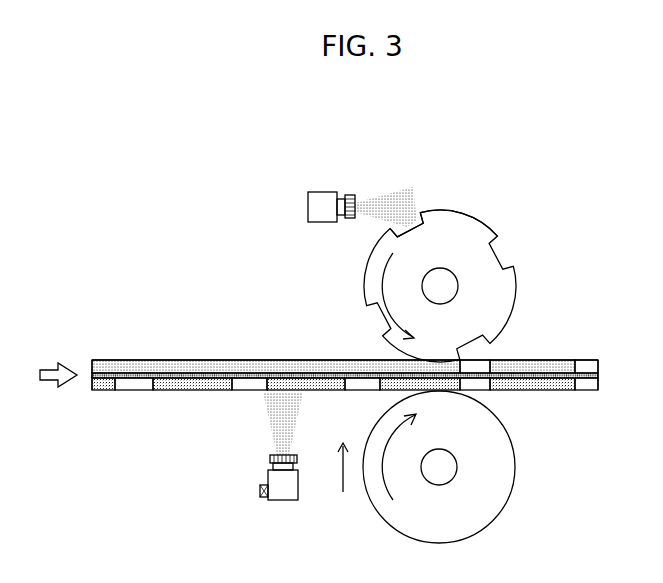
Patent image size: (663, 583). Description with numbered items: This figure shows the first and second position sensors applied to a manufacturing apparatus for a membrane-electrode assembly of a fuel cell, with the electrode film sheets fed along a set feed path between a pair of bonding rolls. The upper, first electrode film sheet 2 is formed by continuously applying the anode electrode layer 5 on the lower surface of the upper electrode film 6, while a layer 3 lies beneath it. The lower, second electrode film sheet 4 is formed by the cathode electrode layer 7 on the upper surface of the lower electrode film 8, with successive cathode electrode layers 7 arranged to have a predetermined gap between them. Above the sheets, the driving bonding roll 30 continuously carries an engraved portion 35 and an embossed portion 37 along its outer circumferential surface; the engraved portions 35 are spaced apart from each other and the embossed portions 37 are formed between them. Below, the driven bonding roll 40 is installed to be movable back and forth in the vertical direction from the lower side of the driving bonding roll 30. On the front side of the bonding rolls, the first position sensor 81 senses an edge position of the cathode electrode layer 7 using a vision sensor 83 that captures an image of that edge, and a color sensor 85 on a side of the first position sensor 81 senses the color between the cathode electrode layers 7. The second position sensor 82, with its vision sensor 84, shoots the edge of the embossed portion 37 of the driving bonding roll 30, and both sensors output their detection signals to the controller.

The first electrode film sheet 2 is at (345, 326).
The adhesive layer 3 is at (191, 377).
The second electrode film sheet 4 is at (345, 429).
The anode electrode layer 5 is at (147, 364).
The upper electrode film 6 is at (150, 311).
The cathode electrode layer 7 is at (174, 389).
The lower electrode film 8 is at (139, 392).
The driving bonding roll 30 is at (476, 258).
The engraved portion 35 is at (417, 216).
The embossed portion 37 is at (447, 220).
The driven bonding roll 40 is at (522, 468).
The first position sensor 81 is at (253, 469).
The second position sensor 82 is at (330, 189).
The vision sensor 83 is at (283, 501).
The vision sensor 84 is at (306, 207).
The color sensor 85 is at (266, 471).